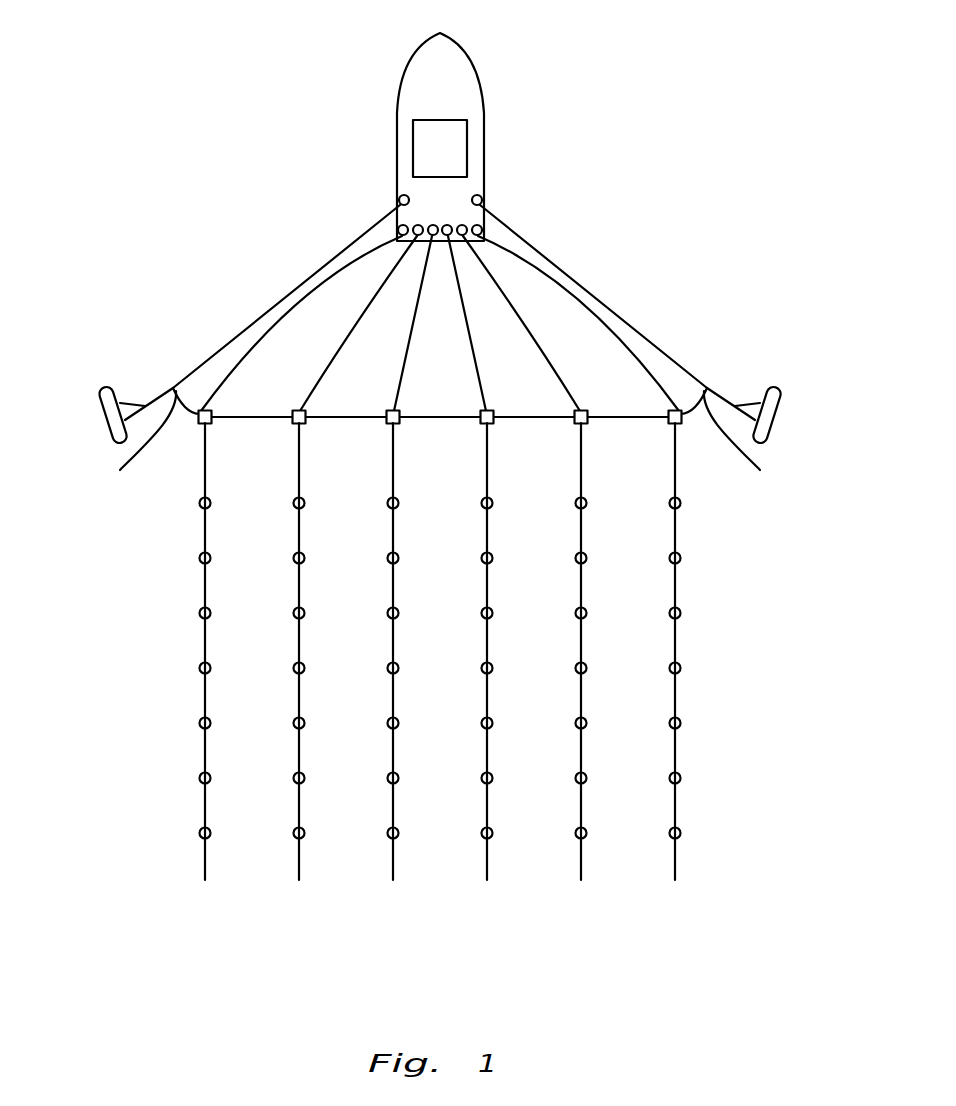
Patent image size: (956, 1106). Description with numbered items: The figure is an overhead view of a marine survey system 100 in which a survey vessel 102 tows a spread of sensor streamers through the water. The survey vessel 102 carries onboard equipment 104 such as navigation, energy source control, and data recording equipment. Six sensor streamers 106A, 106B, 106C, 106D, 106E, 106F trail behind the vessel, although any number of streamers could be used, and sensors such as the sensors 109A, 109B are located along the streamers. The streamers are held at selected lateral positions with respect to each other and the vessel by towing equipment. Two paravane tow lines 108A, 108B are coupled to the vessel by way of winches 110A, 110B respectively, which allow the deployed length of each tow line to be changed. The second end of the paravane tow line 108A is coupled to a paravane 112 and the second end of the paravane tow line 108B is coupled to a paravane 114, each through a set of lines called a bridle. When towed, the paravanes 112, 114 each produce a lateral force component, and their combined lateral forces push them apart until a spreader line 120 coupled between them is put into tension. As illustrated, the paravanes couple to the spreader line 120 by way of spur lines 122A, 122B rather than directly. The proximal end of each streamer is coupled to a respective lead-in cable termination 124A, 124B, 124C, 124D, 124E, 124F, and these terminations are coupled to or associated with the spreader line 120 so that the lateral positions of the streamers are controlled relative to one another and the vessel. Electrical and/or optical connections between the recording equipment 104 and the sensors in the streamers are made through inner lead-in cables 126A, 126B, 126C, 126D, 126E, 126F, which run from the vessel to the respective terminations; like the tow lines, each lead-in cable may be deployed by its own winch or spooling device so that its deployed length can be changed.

The marine survey system 100 is at (178, 171).
The survey vessel 102 is at (402, 83).
The onboard equipment 104 is at (443, 120).
The sensor streamer 106A is at (161, 667).
The sensor streamer 106B is at (299, 858).
The sensor streamer 106C is at (393, 858).
The sensor streamer 106D is at (487, 858).
The sensor streamer 106E is at (581, 858).
The sensor streamer 106F is at (675, 858).
The paravane tow line 108A is at (357, 240).
The paravane tow line 108B is at (523, 240).
The sensor 109A is at (199, 505).
The sensor 109B is at (199, 560).
The winch 110A is at (398, 194).
The winch 110B is at (483, 193).
The paravane 112 is at (104, 420).
The paravane 114 is at (776, 418).
The spreader line 120 is at (425, 422).
The spur line 122A is at (119, 441).
The spur line 122B is at (759, 441).
The lead-in cable termination 124A is at (191, 424).
The lead-in cable termination 124B is at (285, 424).
The lead-in cable termination 124C is at (379, 424).
The lead-in cable termination 124D is at (497, 425).
The lead-in cable termination 124E is at (591, 425).
The lead-in cable termination 124F is at (685, 425).
The inner lead-in cable 126A is at (367, 273).
The inner lead-in cable 126B is at (375, 313).
The inner lead-in cable 126C is at (402, 377).
The inner lead-in cable 126D is at (478, 377).
The inner lead-in cable 126E is at (505, 313).
The inner lead-in cable 126F is at (513, 273).